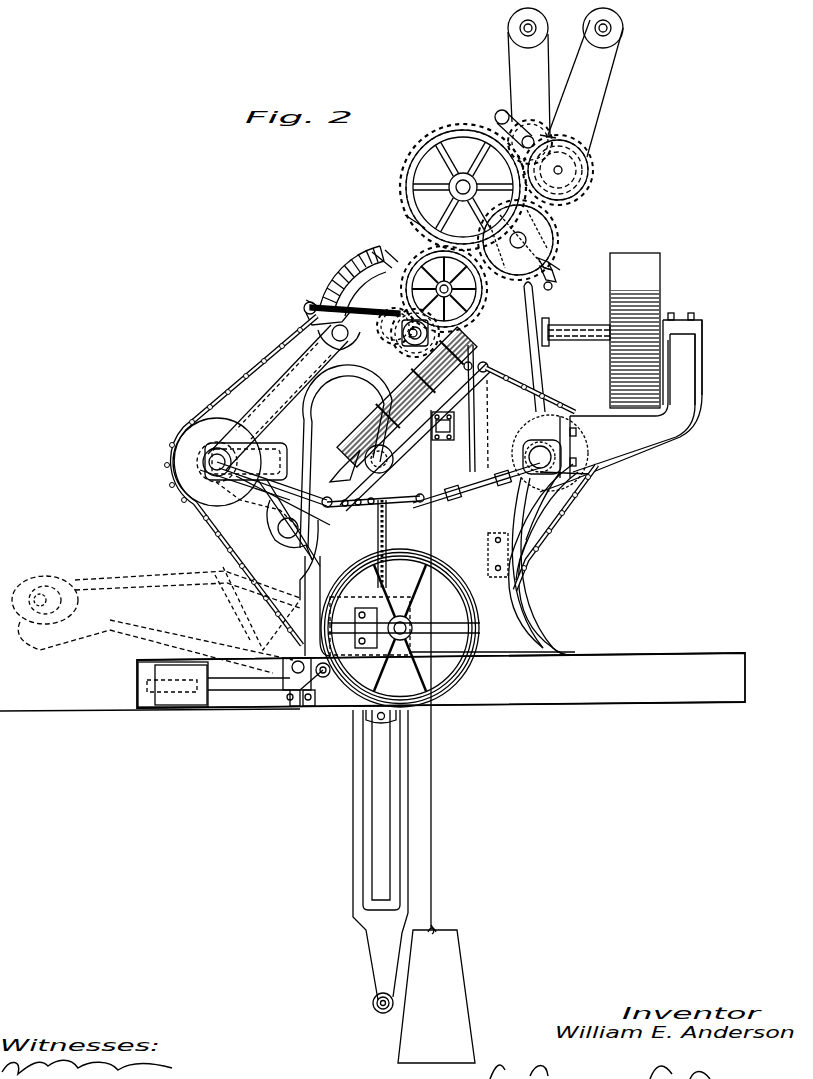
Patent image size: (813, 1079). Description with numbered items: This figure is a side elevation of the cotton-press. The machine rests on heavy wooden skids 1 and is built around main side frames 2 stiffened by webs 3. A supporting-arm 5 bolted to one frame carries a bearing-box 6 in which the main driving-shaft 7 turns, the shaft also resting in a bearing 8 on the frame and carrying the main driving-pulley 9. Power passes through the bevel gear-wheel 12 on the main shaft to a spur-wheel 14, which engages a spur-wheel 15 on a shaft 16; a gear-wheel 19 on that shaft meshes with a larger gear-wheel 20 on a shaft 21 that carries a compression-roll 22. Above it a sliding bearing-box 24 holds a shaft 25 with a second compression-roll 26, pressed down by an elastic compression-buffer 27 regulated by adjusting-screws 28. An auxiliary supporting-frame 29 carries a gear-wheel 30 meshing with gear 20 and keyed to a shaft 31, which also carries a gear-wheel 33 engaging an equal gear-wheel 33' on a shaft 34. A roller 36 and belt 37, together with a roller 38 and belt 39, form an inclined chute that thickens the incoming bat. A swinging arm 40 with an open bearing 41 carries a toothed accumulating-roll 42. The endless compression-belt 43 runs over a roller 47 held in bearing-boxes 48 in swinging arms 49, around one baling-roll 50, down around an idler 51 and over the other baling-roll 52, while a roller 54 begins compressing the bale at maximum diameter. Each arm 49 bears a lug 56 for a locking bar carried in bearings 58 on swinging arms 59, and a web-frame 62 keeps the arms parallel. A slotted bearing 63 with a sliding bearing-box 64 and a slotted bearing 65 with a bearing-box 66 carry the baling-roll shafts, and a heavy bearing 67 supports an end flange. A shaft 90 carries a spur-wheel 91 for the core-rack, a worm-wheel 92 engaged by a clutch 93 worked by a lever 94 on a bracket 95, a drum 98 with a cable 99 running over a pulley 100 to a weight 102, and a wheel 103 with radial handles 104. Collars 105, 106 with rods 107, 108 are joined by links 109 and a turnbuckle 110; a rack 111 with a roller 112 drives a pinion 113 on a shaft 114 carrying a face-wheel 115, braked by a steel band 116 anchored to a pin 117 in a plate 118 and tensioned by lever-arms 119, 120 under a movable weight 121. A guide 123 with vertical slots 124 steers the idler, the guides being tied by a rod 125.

The skids 1 is at (372, 682).
The main side frames 2 is at (309, 606).
The webs 3 is at (536, 610).
The supporting-arm 5 is at (605, 487).
The bearing-box 6 is at (704, 322).
The main driving-shaft 7 is at (579, 319).
The bearing 8 is at (545, 318).
The main driving-pulley 9 is at (655, 272).
The bevel gear-wheel 12 is at (370, 268).
The spur-wheel 14 is at (342, 290).
The spur-wheel 15 is at (470, 300).
The shaft 16 is at (388, 314).
The gear-wheel 19 is at (430, 334).
The gear-wheel 20 is at (406, 168).
The shaft 21 is at (458, 178).
The compression-roll 22 is at (462, 150).
The sliding bearing-box 24 is at (527, 240).
The shaft 25 is at (560, 268).
The compression-roll 26 is at (556, 232).
The elastic compression-buffer 27 is at (552, 286).
The adjusting-screws 28 is at (556, 273).
The auxiliary supporting-frame 29 is at (552, 262).
The gear-wheel 30 is at (594, 170).
The shaft 31 is at (562, 172).
The gear-wheel 33 is at (603, 170).
The gear-wheel 33' is at (591, 119).
The shaft 34 is at (550, 140).
The roller 36 is at (622, 30).
The belt 37 is at (608, 82).
The roller 38 is at (519, 30).
The belt 39 is at (508, 72).
The swinging arm 40 is at (408, 216).
The open bearing 41 is at (376, 256).
The accumulating-roll 42 is at (392, 258).
The endless compression-belt 43 is at (162, 455).
The roller 47 is at (304, 306).
The bearing-boxes 48 is at (380, 388).
The swinging arms 49 is at (268, 523).
The baling-roll 50 is at (217, 462).
The idler 51 is at (408, 712).
The baling-roll 52 is at (586, 478).
The roller 54 is at (396, 598).
The lug or ear 56 is at (308, 316).
The bearings 58 is at (320, 310).
The swinging arms 59 is at (306, 300).
The web-frame 62 is at (278, 397).
The slotted bearing 63 is at (246, 461).
The sliding bearing-box 64 is at (228, 460).
The slotted bearing 65 is at (285, 548).
The bearing-box 66 is at (556, 453).
The heavy bearing 67 is at (389, 470).
The shaft 90 is at (398, 408).
The spur-wheel 91 is at (370, 442).
The worm-wheel 92 is at (488, 376).
The clutch 93 is at (446, 342).
The lever 94 is at (478, 437).
The bracket 95 is at (474, 366).
The drum 98 is at (456, 420).
The cable or rope 99 is at (434, 524).
The pulley 100 is at (476, 486).
The weight 102 is at (436, 995).
The wheel 103 is at (344, 466).
The radial handles 104 is at (400, 544).
The collar 105 is at (205, 466).
The collar 106 is at (592, 476).
The rod 107 is at (240, 476).
The rod 108 is at (576, 502).
The chain or links 109 is at (431, 526).
The turnbuckle 110 is at (544, 548).
The rack 111 is at (318, 548).
The roller 112 is at (375, 496).
The pinion 113 is at (482, 632).
The shaft 114 is at (470, 659).
The face-wheel 115 is at (470, 686).
The steel band or strap 116 is at (300, 622).
The pin 117 is at (290, 647).
The plate 118 is at (290, 700).
The lever-arm 119 is at (318, 700).
The lever-arm 120 is at (243, 686).
The weight 121 is at (176, 702).
The guide 123 is at (400, 788).
The vertical slots 124 is at (383, 860).
The rod 125 is at (377, 1013).